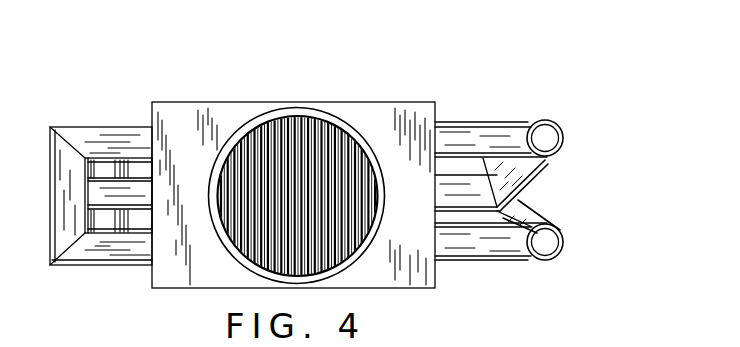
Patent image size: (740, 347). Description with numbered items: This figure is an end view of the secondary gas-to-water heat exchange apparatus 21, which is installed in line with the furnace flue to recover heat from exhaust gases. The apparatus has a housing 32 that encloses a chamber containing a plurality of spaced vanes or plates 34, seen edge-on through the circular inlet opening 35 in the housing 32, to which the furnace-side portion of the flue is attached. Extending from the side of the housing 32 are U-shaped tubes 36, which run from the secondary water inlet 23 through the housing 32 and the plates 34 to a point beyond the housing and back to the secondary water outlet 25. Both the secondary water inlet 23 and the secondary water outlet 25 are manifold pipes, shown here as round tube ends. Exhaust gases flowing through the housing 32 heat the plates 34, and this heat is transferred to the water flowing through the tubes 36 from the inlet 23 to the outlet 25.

The secondary gas-to-water heat exchange apparatus 21 is at (525, 105).
The secondary water inlet 23 is at (565, 238).
The secondary water outlet 25 is at (565, 138).
The housing 32 is at (165, 272).
The vanes or plates 34 is at (353, 233).
The inlet opening 35 is at (250, 130).
The U-shaped tubes 36 is at (468, 228).